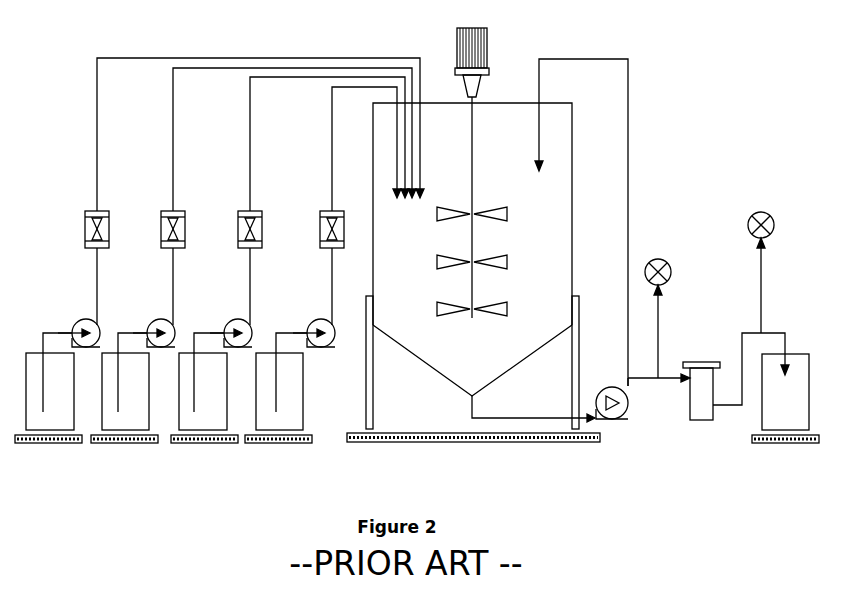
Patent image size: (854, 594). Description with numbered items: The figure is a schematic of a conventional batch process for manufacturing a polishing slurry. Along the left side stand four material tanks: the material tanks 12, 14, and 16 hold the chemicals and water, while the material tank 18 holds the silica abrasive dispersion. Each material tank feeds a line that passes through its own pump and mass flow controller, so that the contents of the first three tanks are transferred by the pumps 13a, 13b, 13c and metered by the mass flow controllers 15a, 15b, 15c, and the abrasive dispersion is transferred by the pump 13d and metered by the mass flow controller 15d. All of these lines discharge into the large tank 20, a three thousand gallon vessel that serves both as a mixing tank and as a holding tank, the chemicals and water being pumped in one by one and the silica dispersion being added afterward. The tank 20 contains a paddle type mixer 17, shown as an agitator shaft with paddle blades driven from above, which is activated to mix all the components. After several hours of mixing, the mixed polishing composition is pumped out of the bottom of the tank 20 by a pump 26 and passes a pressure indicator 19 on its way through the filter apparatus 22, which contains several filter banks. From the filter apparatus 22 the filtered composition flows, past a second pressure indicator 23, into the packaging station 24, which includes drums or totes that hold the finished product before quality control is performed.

The material tank 12 is at (48, 400).
The material tank 14 is at (124, 400).
The material tank 16 is at (204, 400).
The material tank 18 is at (278, 400).
The pump 13a is at (73, 323).
The pump 13b is at (153, 323).
The pump 13c is at (229, 323).
The pump 13d is at (310, 323).
The mass flow controller 15a is at (232, 191).
The mass flow controller 15b is at (271, 196).
The mass flow controller 15c is at (305, 201).
The mass flow controller 15d is at (341, 206).
The paddle type mixer 17 is at (491, 57).
The pressure indicator 19 is at (672, 318).
The tank 20 is at (487, 250).
The filter apparatus 22 is at (736, 376).
The pressure indicator 23 is at (771, 272).
The packaging station 24 is at (785, 398).
The circulation pump 26 is at (643, 402).